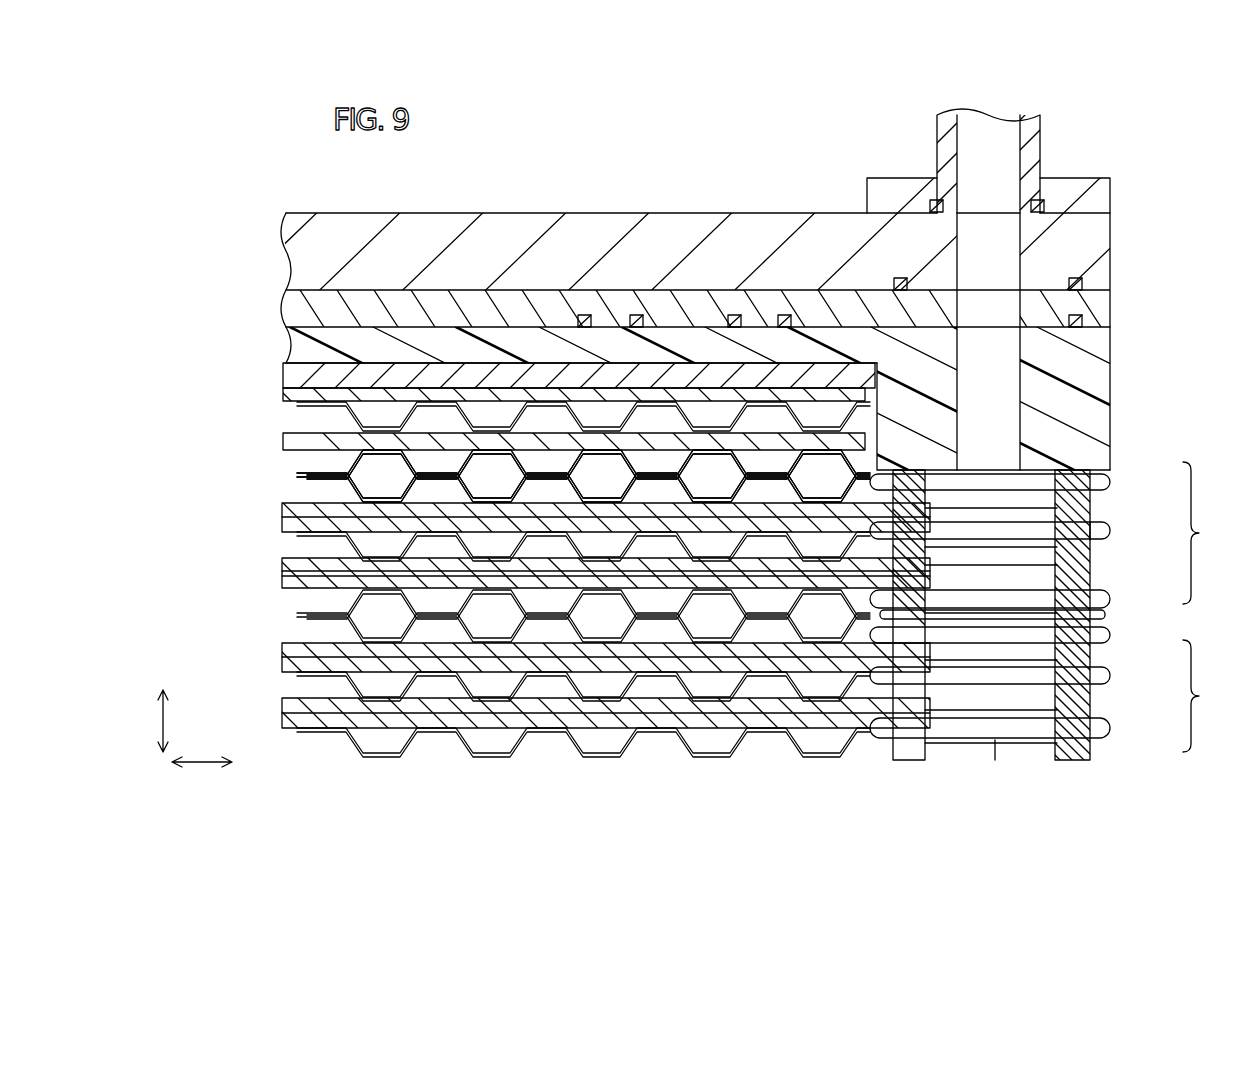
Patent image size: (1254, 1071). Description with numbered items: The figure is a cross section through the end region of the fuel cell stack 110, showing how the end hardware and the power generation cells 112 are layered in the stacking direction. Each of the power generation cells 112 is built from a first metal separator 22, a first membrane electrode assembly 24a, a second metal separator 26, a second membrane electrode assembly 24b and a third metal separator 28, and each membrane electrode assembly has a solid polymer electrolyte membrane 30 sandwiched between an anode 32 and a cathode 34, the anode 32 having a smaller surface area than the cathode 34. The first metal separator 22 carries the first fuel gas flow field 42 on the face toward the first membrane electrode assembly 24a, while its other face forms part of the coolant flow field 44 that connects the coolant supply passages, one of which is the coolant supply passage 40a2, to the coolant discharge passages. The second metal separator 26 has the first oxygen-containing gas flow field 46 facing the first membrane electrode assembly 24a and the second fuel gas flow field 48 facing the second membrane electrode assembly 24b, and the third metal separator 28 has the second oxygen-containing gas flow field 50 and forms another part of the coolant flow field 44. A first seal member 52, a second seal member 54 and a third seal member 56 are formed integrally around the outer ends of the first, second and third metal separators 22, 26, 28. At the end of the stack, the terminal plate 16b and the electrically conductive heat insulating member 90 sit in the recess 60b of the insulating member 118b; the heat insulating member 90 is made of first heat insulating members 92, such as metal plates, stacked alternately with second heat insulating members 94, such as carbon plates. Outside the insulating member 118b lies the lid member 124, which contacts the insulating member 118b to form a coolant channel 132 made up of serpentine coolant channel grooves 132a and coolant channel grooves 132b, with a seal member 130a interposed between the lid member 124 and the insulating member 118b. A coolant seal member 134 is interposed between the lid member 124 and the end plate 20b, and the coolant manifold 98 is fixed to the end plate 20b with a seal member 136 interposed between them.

The fuel cell stack 110 is at (464, 167).
The end plate 20b is at (276, 256).
The coolant manifold 98 is at (1030, 148).
The seal member 136 is at (1080, 200).
The lid member 124 is at (276, 314).
The coolant seal member 134 is at (1085, 281).
The seal member 130a is at (1085, 320).
The coolant channel 132 is at (684, 228).
The coolant channel grooves 132a is at (638, 315).
The coolant channel grooves 132b is at (786, 315).
The insulating member 118b is at (725, 398).
The recess 60b is at (878, 416).
The terminal plate 16b is at (283, 378).
The heat insulating member 90 is at (547, 441).
The second heat insulating members 94 is at (283, 441).
The first heat insulating members 92 is at (300, 453).
The first membrane electrode assembly 24a is at (282, 511).
The anode 32 is at (300, 566).
The solid polymer electrolyte membrane 30 is at (576, 575).
The cathode 34 is at (295, 589).
The second membrane electrode assembly 24b is at (297, 606).
The first fuel gas flow field 42 is at (715, 490).
The coolant flow field 44 is at (385, 625).
The first oxygen-containing gas flow field 46 is at (495, 545).
The second fuel gas flow field 48 is at (645, 540).
The second oxygen-containing gas flow field 50 is at (555, 598).
The first seal member 52 is at (1105, 478).
The second seal member 54 is at (1100, 537).
The third seal member 56 is at (1102, 612).
The first metal separator 22 is at (1118, 645).
The second metal separator 26 is at (1118, 683).
The third metal separator 28 is at (1119, 732).
The power generation cells 112 is at (1215, 607).
The coolant supply passage 40a2 is at (1000, 741).